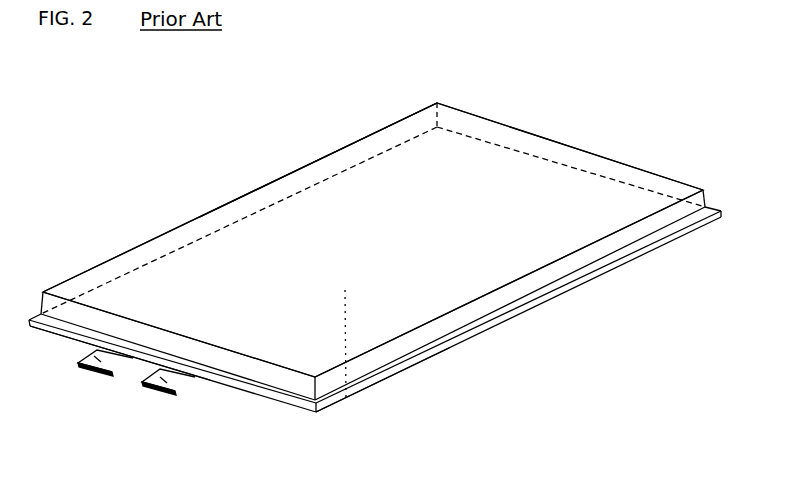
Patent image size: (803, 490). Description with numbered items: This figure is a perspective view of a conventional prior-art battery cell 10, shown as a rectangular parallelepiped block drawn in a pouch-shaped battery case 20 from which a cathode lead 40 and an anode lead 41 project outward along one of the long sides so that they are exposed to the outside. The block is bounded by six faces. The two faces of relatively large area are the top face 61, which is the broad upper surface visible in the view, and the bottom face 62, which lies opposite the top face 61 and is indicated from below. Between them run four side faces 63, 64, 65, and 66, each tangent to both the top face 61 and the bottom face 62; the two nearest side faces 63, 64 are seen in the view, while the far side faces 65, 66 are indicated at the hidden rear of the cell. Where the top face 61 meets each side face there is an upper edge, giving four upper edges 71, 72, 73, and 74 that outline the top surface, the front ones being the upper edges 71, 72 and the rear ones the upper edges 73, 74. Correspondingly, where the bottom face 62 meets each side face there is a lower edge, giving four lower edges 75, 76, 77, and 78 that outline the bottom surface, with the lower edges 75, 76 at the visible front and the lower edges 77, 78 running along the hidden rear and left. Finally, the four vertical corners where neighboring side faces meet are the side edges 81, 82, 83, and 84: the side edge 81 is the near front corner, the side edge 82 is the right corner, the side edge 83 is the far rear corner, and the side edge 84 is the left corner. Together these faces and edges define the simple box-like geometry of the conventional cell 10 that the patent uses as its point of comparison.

The battery cell 10 is at (93, 138).
The pouch-shaped battery case 20 is at (172, 396).
The cathode lead 40 is at (84, 367).
The anode lead 41 is at (145, 385).
The top face 61 is at (345, 288).
The bottom face 62 is at (360, 393).
The side face 63 is at (296, 383).
The side face 64 is at (547, 270).
The side face 65 is at (582, 156).
The side face 66 is at (277, 181).
The upper edge 71 is at (185, 333).
The upper edge 72 is at (578, 279).
The upper edge 73 is at (540, 125).
The upper edge 74 is at (318, 160).
The lower edge 75 is at (203, 386).
The lower edge 76 is at (505, 298).
The lower edge 77 is at (642, 170).
The lower edge 78 is at (236, 217).
The side edge 81 is at (346, 400).
The side edge 82 is at (723, 213).
The side edge 83 is at (445, 108).
The side edge 84 is at (38, 303).